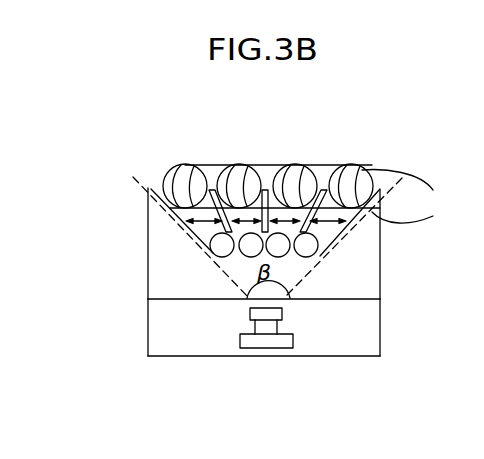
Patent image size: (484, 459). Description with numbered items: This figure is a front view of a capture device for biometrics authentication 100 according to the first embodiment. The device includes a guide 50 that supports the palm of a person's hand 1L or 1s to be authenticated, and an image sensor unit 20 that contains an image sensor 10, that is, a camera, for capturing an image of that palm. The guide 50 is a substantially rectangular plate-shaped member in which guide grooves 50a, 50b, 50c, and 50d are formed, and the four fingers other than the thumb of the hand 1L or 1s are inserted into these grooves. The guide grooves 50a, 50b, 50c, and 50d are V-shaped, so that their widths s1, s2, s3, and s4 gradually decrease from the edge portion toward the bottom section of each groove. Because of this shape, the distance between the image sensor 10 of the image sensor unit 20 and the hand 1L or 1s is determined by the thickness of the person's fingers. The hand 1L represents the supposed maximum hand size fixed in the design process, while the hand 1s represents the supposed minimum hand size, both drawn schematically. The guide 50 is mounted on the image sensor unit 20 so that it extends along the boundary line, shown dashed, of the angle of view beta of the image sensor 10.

The capture device for biometrics authentication 100 is at (207, 286).
The guide 50 is at (148, 268).
The image sensor unit 20 is at (148, 327).
The image sensor 10 is at (265, 356).
The guide groove 50a is at (170, 168).
The guide groove 50b is at (232, 168).
The guide groove 50c is at (297, 168).
The guide groove 50d is at (347, 168).
The width of guide groove s1 is at (199, 168).
The width of guide groove s2 is at (250, 168).
The width of guide groove s3 is at (282, 168).
The width of guide groove s4 is at (337, 168).
The person's hand 1L is at (361, 169).
The person's hand 1s is at (317, 258).